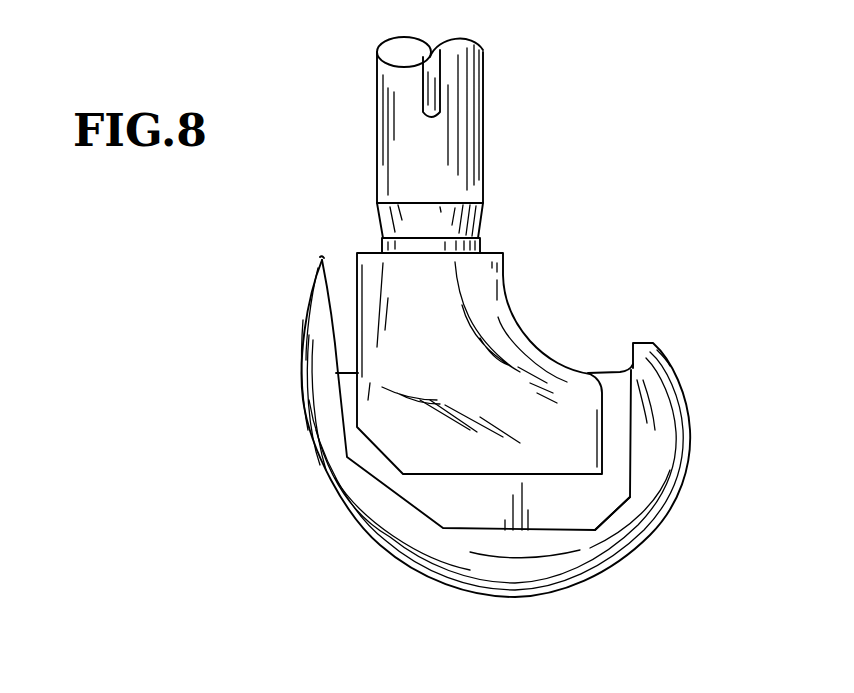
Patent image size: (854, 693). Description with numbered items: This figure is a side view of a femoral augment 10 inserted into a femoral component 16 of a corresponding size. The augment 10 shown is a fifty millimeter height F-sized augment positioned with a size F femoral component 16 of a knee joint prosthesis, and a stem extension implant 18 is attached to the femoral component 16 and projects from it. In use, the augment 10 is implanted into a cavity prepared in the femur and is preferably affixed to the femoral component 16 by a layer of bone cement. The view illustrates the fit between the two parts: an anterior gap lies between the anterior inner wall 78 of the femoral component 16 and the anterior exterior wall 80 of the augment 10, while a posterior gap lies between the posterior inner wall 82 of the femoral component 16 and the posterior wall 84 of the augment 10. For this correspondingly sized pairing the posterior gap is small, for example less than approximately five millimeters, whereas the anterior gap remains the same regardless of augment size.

The femoral augment 10 is at (484, 300).
The femoral component 16 is at (312, 448).
The stem extension implant 18 is at (377, 126).
The anterior inner wall 78 is at (335, 345).
The anterior exterior wall 80 is at (357, 294).
The posterior inner wall 82 is at (620, 470).
The posterior wall 84 is at (603, 422).